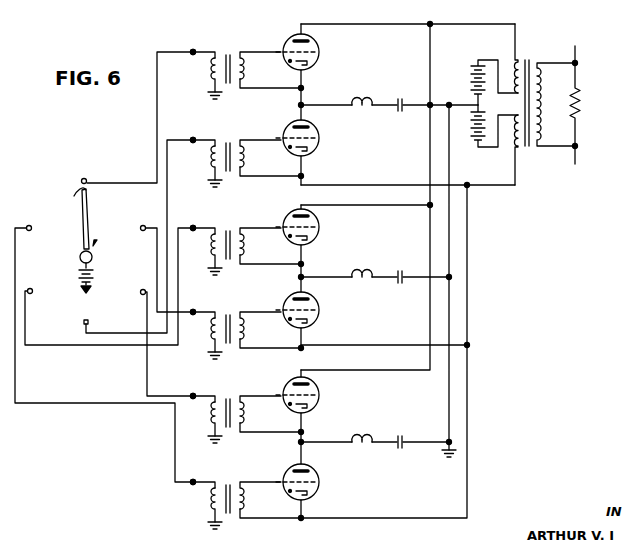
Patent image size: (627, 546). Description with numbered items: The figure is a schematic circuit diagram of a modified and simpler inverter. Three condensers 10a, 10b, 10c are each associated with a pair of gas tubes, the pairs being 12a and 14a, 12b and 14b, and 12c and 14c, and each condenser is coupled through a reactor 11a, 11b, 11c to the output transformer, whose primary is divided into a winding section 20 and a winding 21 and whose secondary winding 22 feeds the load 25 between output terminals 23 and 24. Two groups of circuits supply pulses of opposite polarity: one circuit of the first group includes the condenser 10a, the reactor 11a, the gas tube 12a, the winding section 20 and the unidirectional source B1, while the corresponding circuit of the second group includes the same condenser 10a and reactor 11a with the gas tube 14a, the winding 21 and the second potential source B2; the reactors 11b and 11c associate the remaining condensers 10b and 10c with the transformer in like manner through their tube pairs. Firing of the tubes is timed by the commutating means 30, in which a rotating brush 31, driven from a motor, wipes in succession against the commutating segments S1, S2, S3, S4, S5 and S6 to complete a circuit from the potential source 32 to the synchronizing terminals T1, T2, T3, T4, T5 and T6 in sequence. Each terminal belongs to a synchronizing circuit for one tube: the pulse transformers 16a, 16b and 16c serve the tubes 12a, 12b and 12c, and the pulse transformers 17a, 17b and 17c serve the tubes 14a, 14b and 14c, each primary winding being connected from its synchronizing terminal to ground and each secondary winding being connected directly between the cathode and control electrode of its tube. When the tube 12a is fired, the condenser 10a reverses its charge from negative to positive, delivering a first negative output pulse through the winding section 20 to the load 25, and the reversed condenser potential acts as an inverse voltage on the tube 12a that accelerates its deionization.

The commutating means 30 is at (66, 168).
The commutating segment S1 is at (134, 118).
The commutating segment S2 is at (156, 269).
The commutating segment S3 is at (156, 340).
The commutating segment S4 is at (133, 236).
The commutating segment S5 is at (103, 347).
The commutating segment S6 is at (108, 286).
The rotating brush 31 is at (95, 242).
The potential source 32 is at (78, 276).
The synchronizing terminal T1 is at (198, 42).
The synchronizing terminal T2 is at (198, 302).
The synchronizing terminal T3 is at (198, 386).
The synchronizing terminal T4 is at (198, 130).
The synchronizing terminal T5 is at (198, 218).
The synchronizing terminal T6 is at (198, 472).
The pulse transformer 16a is at (228, 53).
The pulse transformer 17a is at (228, 141).
The pulse transformer 16b is at (228, 229).
The pulse transformer 17b is at (228, 313).
The pulse transformer 16c is at (228, 397).
The pulse transformer 17c is at (228, 483).
The gas tube 12a is at (319, 50).
The gas tube 14a is at (319, 147).
The gas tube 12b is at (319, 227).
The gas tube 14b is at (319, 302).
The gas tube 12c is at (319, 394).
The gas tube 14c is at (319, 468).
The reactor 11a is at (356, 101).
The condenser 10a is at (400, 99).
The reactor 11b is at (356, 272).
The condenser 10b is at (400, 270).
The reactor 11c is at (358, 437).
The condenser 10c is at (402, 436).
The potential source B1 is at (469, 96).
The second potential source B2 is at (472, 138).
The winding section 20 is at (516, 60).
The winding 21 is at (518, 150).
The secondary winding 22 is at (545, 108).
The output terminal 23 is at (572, 49).
The output terminal 24 is at (580, 162).
The load 25 is at (578, 112).